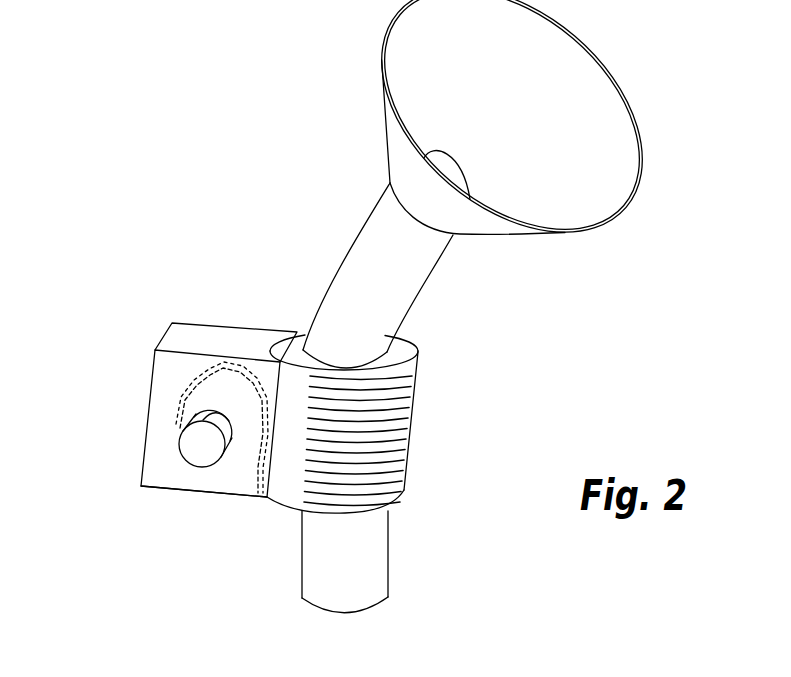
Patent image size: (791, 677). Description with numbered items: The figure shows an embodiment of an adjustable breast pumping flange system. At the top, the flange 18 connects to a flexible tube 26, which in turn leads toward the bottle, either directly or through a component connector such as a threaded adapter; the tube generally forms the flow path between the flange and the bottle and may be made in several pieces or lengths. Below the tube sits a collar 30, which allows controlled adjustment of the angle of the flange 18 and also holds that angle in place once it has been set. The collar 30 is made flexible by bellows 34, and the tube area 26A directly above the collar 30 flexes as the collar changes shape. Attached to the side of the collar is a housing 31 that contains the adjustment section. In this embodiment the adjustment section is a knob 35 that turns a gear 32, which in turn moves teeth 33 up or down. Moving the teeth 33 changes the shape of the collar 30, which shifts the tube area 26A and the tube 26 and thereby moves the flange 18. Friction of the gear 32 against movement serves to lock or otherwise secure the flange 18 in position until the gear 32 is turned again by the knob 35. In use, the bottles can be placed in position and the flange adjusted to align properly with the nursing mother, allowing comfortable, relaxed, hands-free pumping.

The flange 18 is at (625, 96).
The flexible tube 26 is at (433, 265).
The tube area above the collar 26A is at (393, 304).
The collar 30 is at (382, 489).
The housing 31 is at (140, 455).
The gear 32 is at (203, 377).
The teeth 33 is at (247, 488).
The bellows 34 is at (410, 430).
The knob 35 is at (193, 468).